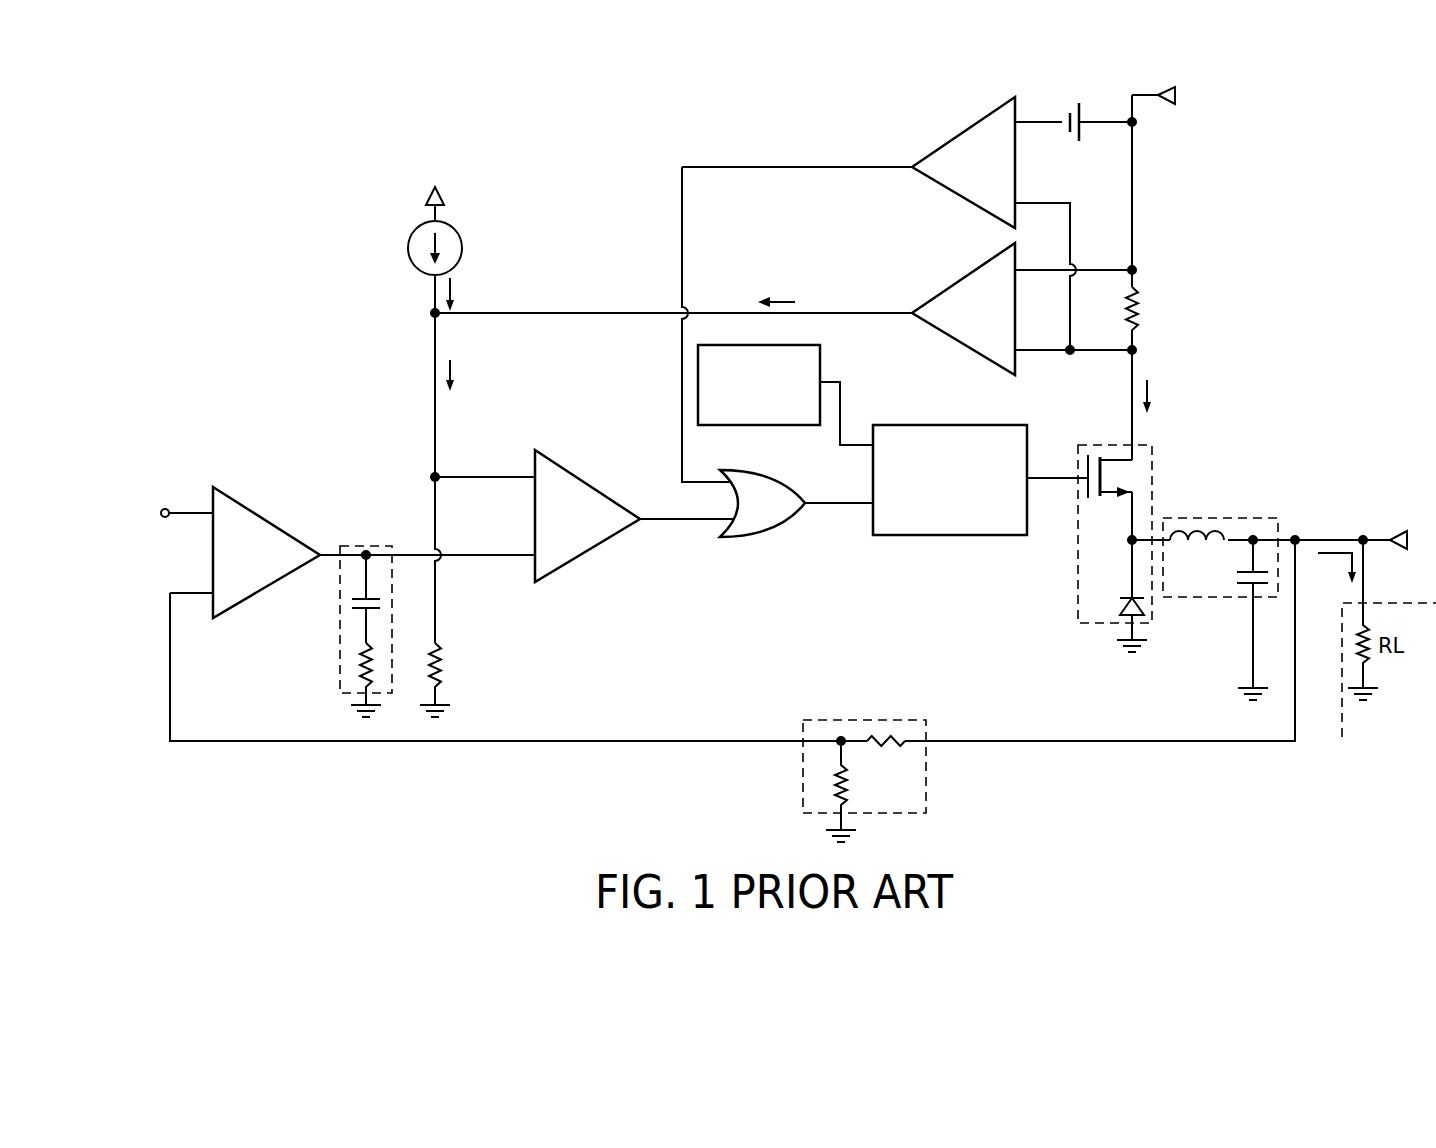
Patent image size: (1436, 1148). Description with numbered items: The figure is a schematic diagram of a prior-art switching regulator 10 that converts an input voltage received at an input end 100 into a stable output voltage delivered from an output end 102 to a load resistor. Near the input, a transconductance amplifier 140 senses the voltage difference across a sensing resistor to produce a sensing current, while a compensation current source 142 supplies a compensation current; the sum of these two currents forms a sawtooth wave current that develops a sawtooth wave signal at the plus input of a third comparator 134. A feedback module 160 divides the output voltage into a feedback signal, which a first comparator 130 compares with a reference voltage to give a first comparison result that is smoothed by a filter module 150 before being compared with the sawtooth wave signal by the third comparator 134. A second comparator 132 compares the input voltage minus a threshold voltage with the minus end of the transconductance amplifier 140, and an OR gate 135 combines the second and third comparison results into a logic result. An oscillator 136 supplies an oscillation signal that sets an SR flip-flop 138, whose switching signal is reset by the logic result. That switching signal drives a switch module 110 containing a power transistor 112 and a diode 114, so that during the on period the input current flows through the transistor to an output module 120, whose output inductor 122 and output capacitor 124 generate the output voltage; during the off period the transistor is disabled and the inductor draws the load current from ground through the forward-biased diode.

The switching regulator 10 is at (283, 163).
The input end 100 is at (1165, 106).
The output end 102 is at (1399, 550).
The switch module 110 is at (1080, 623).
The power transistor 112 is at (1122, 479).
The diode 114 is at (1145, 612).
The output module 120 is at (1228, 518).
The output inductor 122 is at (1190, 530).
The output capacitor 124 is at (1237, 573).
The first comparator 130 is at (255, 512).
The second comparator 132 is at (955, 132).
The third comparator 134 is at (578, 560).
The OR gate 135 is at (762, 534).
The oscillator 136 is at (770, 426).
The SR flip-flop 138 is at (948, 424).
The transconductance amplifier 140 is at (953, 280).
The compensation current source 142 is at (462, 240).
The filter module 150 is at (340, 675).
The feedback module 160 is at (840, 720).